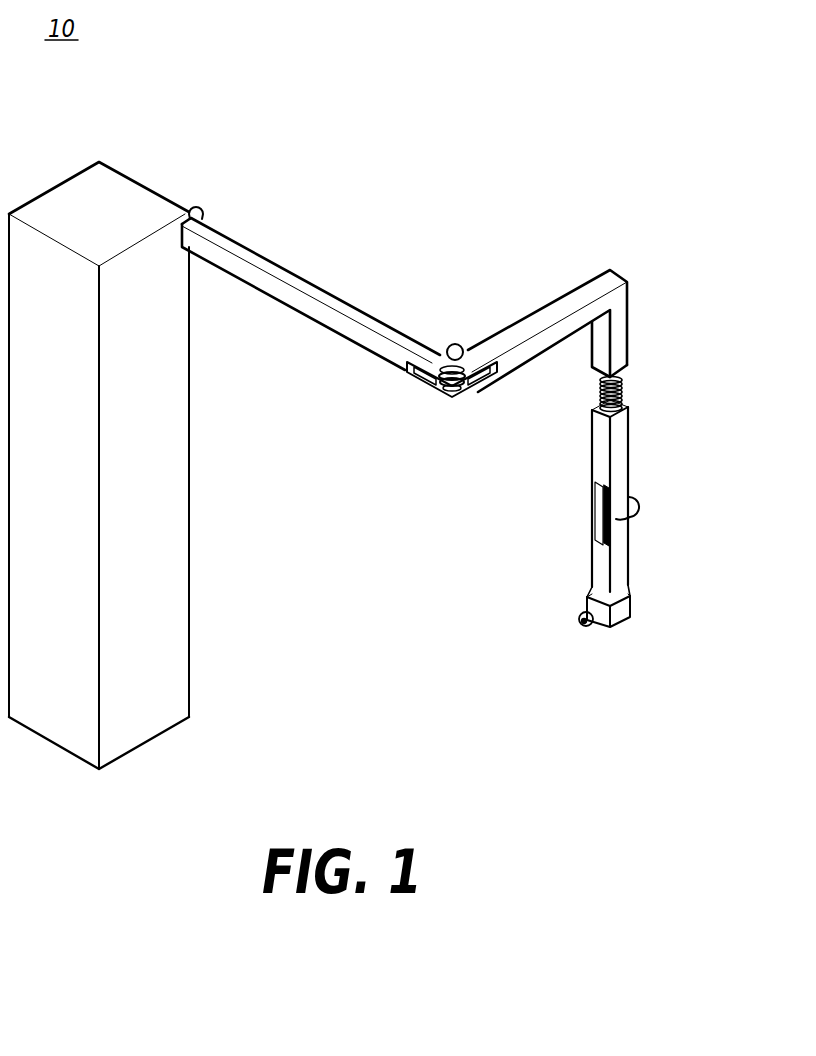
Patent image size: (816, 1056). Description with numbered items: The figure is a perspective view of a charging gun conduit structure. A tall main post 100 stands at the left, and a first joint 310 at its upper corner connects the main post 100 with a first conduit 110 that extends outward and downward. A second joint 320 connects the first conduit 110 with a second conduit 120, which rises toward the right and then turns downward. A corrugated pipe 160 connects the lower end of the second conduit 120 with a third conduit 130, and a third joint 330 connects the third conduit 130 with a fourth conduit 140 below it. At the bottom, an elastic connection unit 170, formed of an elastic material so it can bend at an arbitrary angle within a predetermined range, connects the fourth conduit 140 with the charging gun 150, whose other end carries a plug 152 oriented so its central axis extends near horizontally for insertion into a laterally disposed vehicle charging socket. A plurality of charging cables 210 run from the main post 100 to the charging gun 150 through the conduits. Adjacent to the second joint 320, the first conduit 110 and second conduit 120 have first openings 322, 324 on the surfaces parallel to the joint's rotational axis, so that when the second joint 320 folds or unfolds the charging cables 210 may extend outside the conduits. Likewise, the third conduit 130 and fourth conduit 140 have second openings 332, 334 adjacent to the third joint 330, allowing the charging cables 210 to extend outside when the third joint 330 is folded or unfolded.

The main post 100 is at (193, 538).
The first conduit 110 is at (312, 285).
The second conduit 120 is at (586, 291).
The third conduit 130 is at (628, 445).
The fourth conduit 140 is at (624, 556).
The charging gun 150 is at (632, 606).
The plug 152 is at (579, 623).
The corrugated pipe 160 is at (630, 386).
The elastic connection unit 170 is at (598, 597).
The charging cables 210 is at (416, 378).
The first joint 310 is at (198, 206).
The second joint 320 is at (452, 348).
The first opening 322 is at (428, 385).
The first opening 324 is at (481, 385).
The third joint 330 is at (642, 508).
The second opening 332 is at (596, 496).
The second opening 334 is at (598, 520).